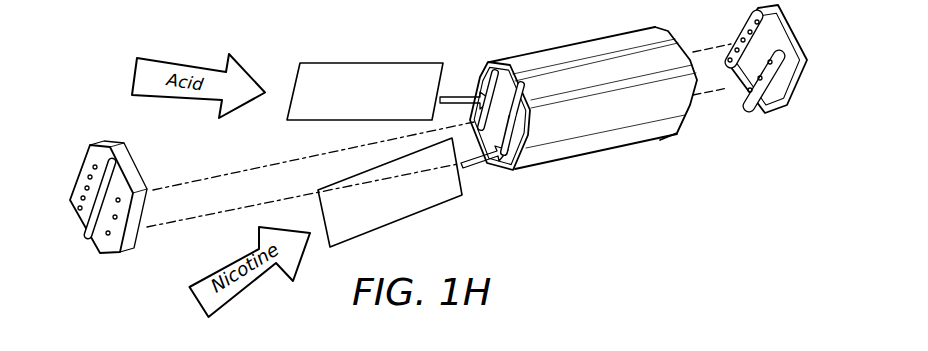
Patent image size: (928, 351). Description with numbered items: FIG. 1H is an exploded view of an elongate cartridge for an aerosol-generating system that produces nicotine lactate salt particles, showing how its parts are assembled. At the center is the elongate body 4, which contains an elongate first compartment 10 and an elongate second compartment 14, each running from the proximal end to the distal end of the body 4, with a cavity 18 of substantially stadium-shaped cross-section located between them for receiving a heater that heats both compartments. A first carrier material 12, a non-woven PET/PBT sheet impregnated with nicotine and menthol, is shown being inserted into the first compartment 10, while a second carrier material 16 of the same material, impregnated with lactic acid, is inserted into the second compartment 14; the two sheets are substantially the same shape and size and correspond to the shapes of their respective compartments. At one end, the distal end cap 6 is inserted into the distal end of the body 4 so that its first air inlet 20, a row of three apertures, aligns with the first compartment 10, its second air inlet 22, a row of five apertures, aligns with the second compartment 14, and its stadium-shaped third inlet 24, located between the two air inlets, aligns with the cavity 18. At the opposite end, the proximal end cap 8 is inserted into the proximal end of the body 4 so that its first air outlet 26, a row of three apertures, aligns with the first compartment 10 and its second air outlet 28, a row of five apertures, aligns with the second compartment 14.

The elongate body 4 is at (567, 111).
The distal end cap 6 is at (116, 218).
The proximal end cap 8 is at (766, 81).
The first compartment 10 is at (515, 138).
The first carrier material 12 is at (397, 208).
The second compartment 14 is at (492, 82).
The second carrier material 16 is at (370, 72).
The cavity 18 is at (509, 78).
The first air inlet 20 is at (106, 242).
The second air inlet 22 is at (72, 212).
The third inlet 24 is at (105, 177).
The first air outlet 26 is at (753, 98).
The second air outlet 28 is at (732, 44).